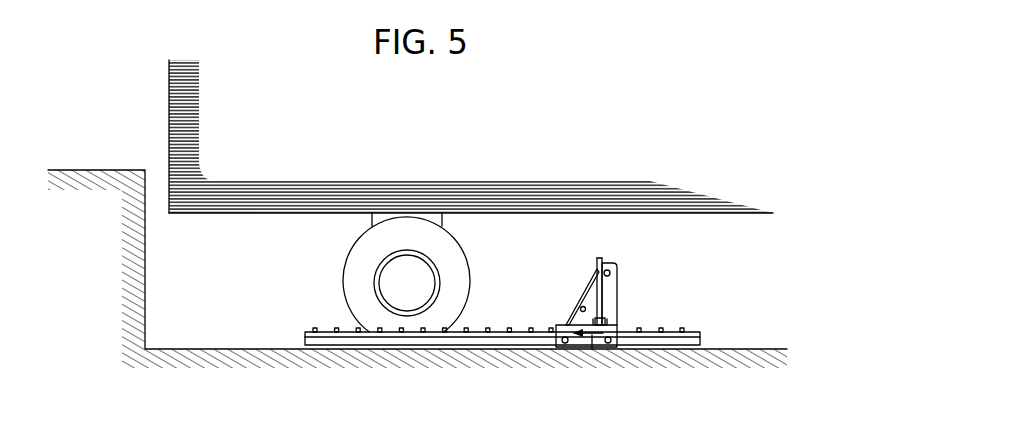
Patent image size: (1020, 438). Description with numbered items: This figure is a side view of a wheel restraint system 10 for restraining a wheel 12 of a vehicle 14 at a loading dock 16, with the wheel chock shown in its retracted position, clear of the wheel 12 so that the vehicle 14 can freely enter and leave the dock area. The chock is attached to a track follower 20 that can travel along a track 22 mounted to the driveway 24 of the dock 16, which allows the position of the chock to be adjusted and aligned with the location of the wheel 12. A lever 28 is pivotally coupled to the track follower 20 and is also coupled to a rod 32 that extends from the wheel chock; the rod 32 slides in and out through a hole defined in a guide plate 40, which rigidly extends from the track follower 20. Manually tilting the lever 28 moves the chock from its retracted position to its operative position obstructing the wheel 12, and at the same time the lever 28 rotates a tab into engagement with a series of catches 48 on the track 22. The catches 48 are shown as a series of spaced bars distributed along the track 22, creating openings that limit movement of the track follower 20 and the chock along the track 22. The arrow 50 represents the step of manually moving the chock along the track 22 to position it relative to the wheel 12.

The wheel restraint system 10 is at (708, 283).
The wheel 12 is at (348, 252).
The vehicle 14 is at (169, 137).
The loading dock 16 is at (225, 286).
The track follower 20 is at (567, 318).
The track 22 is at (305, 343).
The driveway 24 is at (217, 349).
The lever 28 is at (597, 290).
The rod 32 is at (613, 285).
The guide plate 40 is at (608, 302).
The catches 48 is at (510, 328).
The arrow 50 is at (592, 350).